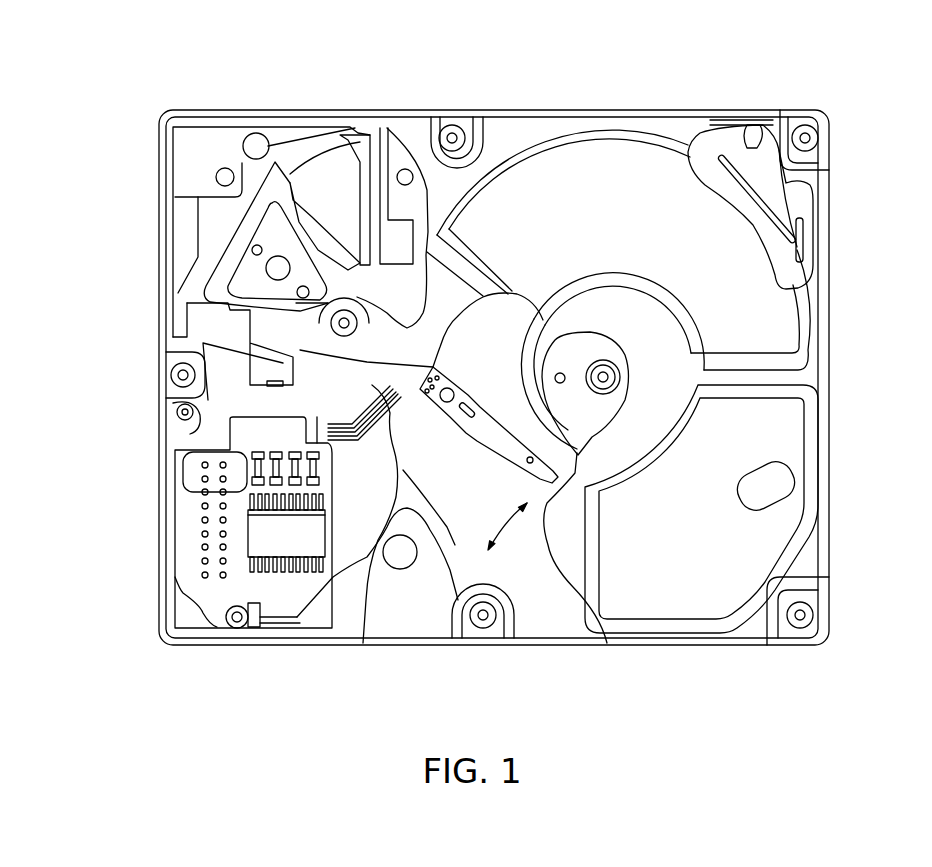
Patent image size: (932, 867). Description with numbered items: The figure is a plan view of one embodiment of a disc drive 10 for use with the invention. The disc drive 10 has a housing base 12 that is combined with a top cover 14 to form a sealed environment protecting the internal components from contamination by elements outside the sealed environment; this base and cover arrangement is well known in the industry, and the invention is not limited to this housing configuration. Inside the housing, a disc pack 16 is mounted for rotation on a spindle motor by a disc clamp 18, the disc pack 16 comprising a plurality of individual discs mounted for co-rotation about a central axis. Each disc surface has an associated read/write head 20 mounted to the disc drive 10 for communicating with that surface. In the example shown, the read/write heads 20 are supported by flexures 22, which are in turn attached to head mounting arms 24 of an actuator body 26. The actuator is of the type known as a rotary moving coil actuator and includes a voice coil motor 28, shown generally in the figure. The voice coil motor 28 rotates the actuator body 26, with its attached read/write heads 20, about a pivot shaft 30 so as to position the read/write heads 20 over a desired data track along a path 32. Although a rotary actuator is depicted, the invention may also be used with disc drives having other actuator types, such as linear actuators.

The disc drive 10 is at (124, 105).
The housing base 12 is at (282, 645).
The top cover 14 is at (818, 383).
The disc pack 16 is at (430, 557).
The disc clamp 18 is at (593, 413).
The read/write head 20 is at (607, 642).
The flexure 22 is at (497, 430).
The head mounting arm 24 is at (245, 388).
The actuator body 26 is at (396, 298).
The voice coil motor 28 is at (354, 298).
The pivot shaft 30 is at (337, 322).
The path 32 is at (508, 530).